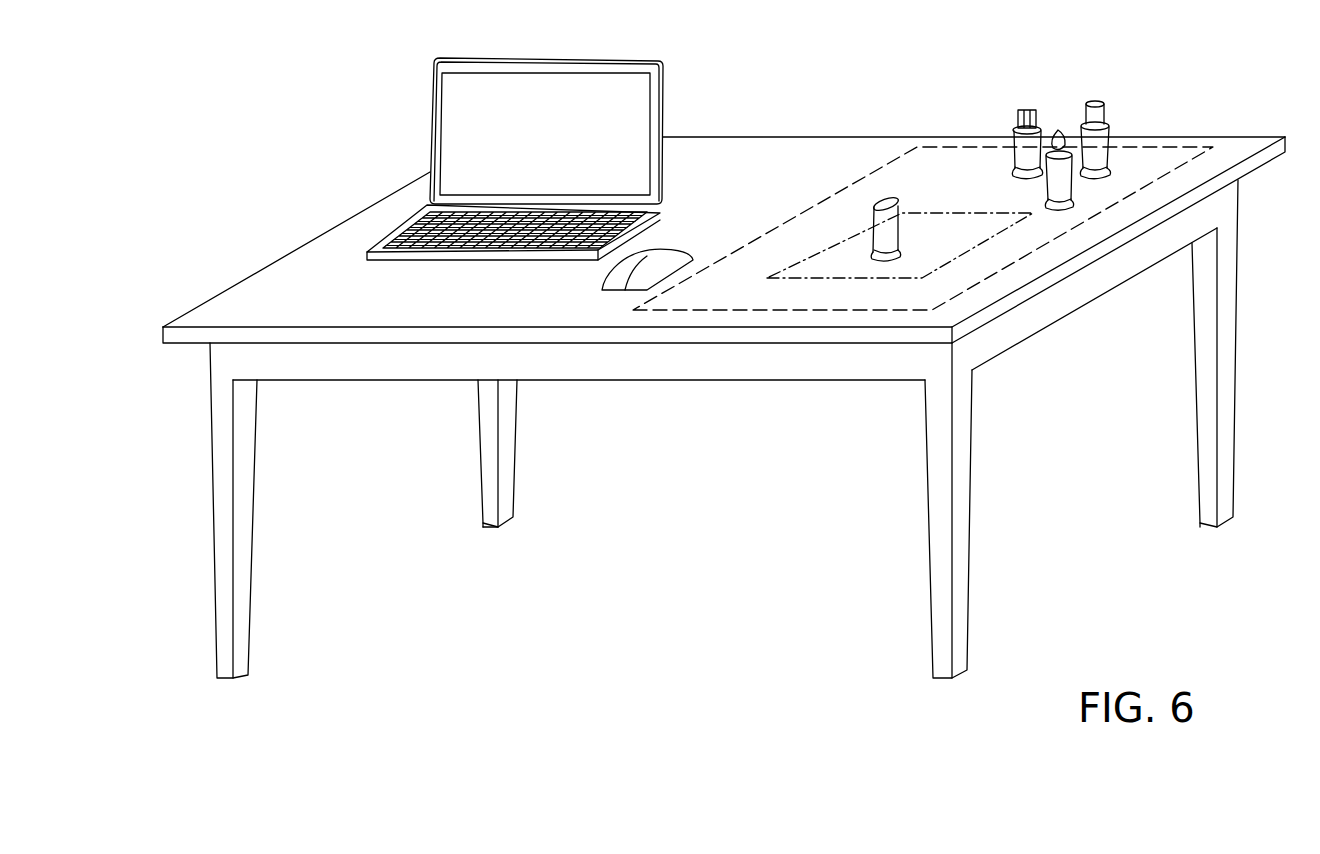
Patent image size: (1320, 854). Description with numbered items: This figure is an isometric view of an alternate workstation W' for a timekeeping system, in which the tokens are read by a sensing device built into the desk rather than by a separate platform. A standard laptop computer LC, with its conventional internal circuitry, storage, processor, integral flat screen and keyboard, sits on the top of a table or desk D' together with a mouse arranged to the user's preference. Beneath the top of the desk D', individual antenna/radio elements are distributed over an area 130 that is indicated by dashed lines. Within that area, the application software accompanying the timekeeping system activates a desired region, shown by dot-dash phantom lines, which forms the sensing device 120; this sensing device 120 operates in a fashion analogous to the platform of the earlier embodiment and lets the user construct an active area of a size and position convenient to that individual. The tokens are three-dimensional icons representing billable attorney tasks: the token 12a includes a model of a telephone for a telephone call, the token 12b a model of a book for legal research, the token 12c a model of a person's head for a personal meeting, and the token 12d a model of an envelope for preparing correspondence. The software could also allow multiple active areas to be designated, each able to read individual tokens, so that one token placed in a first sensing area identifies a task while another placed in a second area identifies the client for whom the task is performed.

The token 12a is at (878, 223).
The token 12b is at (1013, 130).
The token 12c is at (1056, 138).
The token 12d is at (1102, 137).
The sensing device 120 is at (932, 215).
The area 130 is at (1198, 148).
The table or desk D' is at (724, 197).
The alternate workstation W' is at (724, 407).
The laptop computer LC is at (400, 230).